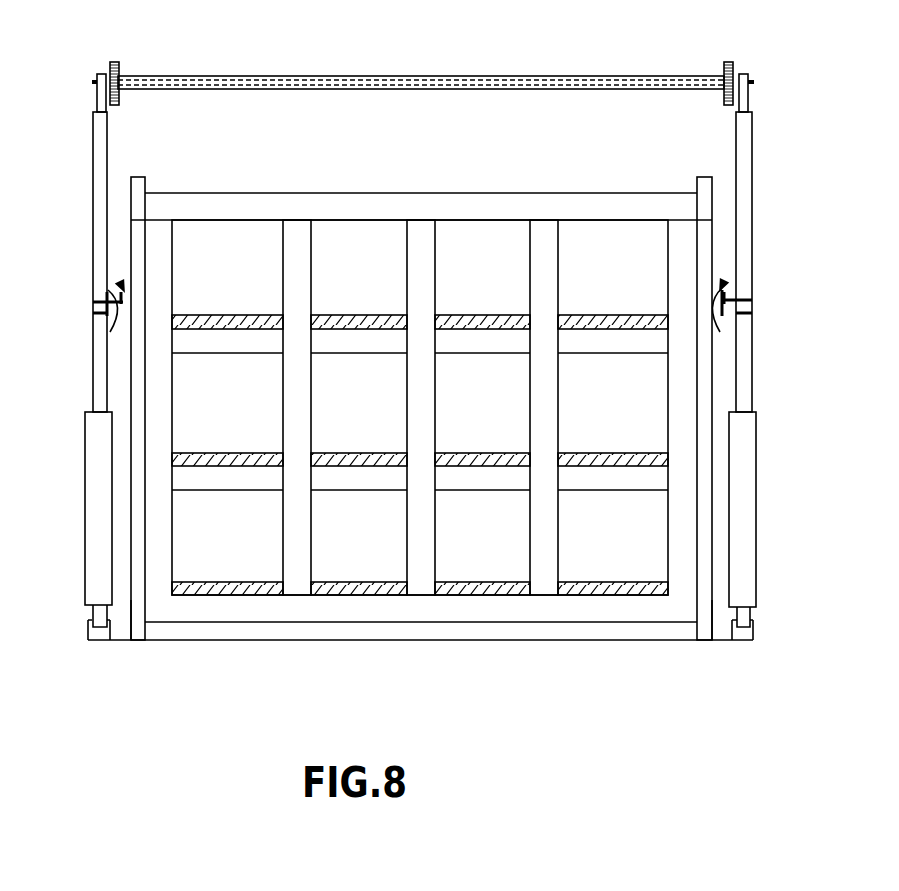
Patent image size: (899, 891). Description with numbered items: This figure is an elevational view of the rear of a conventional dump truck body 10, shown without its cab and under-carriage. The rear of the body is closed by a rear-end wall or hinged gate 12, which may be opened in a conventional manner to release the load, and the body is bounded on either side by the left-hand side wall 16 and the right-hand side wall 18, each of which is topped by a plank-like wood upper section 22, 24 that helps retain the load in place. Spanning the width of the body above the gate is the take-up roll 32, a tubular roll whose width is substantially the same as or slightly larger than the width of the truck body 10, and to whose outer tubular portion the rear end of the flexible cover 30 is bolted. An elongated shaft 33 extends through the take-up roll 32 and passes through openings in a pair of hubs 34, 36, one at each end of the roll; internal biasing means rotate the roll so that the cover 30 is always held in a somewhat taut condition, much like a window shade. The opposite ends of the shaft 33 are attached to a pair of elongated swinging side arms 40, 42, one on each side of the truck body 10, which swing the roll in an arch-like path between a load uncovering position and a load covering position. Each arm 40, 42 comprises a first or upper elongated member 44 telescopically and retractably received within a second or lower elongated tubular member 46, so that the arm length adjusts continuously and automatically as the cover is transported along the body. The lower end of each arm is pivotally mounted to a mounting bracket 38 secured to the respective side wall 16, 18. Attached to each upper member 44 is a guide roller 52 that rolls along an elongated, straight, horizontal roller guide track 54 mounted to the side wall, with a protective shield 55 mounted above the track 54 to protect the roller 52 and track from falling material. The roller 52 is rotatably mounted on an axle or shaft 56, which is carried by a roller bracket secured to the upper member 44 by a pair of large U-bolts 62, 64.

The truck body 10 is at (325, 656).
The rear-end wall or hinged gate 12 is at (482, 568).
The left-hand side wall 16 is at (130, 598).
The right-hand side wall 18 is at (712, 618).
The plank-like wood upper section 22 is at (133, 177).
The plank-like wood upper section 24 is at (706, 177).
The flexible cover 30 is at (427, 133).
The take-up roll 32 is at (548, 76).
The elongated shaft 33 is at (343, 82).
The hub 34 is at (112, 62).
The hub 36 is at (729, 62).
The mounting bracket 38 is at (97, 641).
The swinging side arm 40 is at (88, 143).
The swinging side arm 42 is at (760, 124).
The first or upper elongated member 44 is at (93, 390).
The second or lower elongated tubular member 46 is at (85, 497).
The guide roller 52 is at (120, 325).
The roller guide track 54 is at (123, 287).
The protective shield 55 is at (118, 289).
The axle or shaft 56 is at (108, 320).
The U-bolt 62 is at (94, 302).
The U-bolt 64 is at (94, 313).